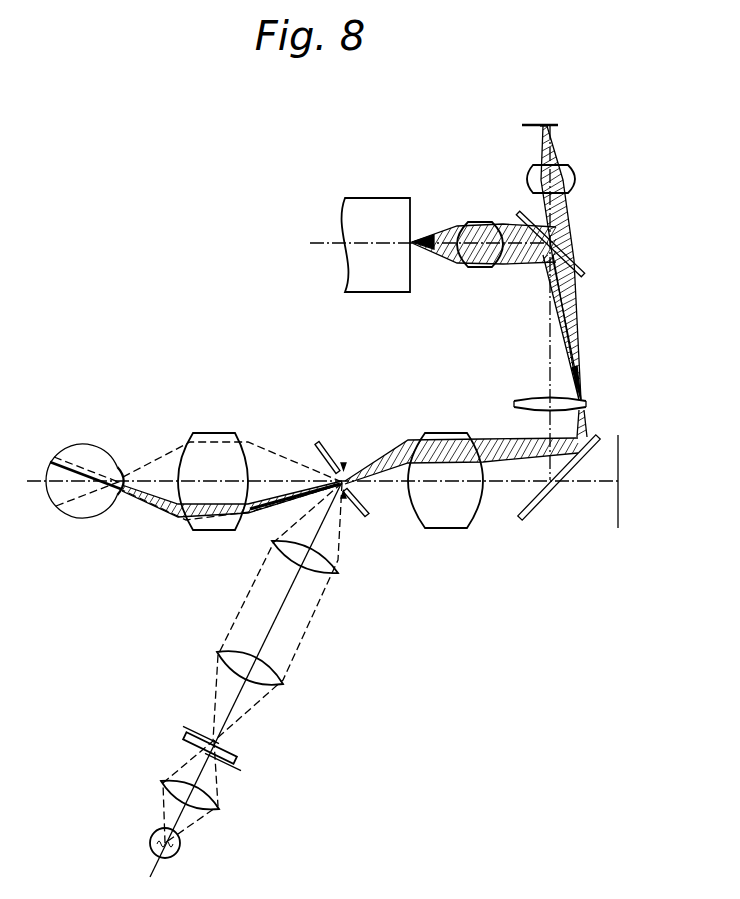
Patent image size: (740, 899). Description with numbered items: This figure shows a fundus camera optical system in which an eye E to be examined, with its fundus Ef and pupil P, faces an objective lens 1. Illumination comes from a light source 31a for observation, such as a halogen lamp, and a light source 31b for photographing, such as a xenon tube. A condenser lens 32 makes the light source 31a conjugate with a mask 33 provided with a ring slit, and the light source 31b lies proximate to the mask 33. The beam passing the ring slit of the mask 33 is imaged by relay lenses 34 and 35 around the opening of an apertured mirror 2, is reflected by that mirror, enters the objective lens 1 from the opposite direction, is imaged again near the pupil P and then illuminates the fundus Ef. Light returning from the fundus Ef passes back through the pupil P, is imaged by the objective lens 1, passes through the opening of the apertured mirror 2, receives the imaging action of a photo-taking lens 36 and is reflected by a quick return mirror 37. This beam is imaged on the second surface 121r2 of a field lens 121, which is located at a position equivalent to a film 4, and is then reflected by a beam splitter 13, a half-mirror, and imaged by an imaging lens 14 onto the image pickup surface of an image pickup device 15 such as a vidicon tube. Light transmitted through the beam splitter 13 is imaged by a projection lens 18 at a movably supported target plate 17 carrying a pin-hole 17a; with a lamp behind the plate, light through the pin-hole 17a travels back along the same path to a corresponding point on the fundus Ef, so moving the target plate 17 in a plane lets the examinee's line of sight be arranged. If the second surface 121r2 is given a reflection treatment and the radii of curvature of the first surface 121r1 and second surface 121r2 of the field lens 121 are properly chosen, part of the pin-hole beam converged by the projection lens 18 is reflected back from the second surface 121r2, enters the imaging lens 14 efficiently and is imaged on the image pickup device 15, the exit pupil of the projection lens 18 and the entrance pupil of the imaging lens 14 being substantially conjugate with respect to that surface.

The objective lens 1 is at (214, 432).
The apertured mirror 2 is at (330, 448).
The film 4 is at (619, 529).
The beam splitter 13 is at (518, 213).
The imaging lens 14 is at (480, 221).
The image pickup device 15 is at (384, 205).
The target plate 17 is at (560, 126).
The pin-hole 17a is at (528, 128).
The projection lens 18 is at (576, 178).
The light source for observation 31a is at (150, 843).
The light source for photographing 31b is at (241, 767).
The condenser lens 32 is at (162, 784).
The mask 33 is at (184, 734).
The relay lens 34 is at (216, 652).
The relay lens 35 is at (268, 548).
The photo-taking lens 36 is at (437, 432).
The quick return mirror 37 is at (537, 510).
The field lens 121 is at (517, 387).
The first surface 121r1 is at (515, 399).
The second surface 121r2 is at (516, 410).
The eye E is at (86, 445).
The fundus Ef is at (52, 500).
The pupil P is at (114, 496).